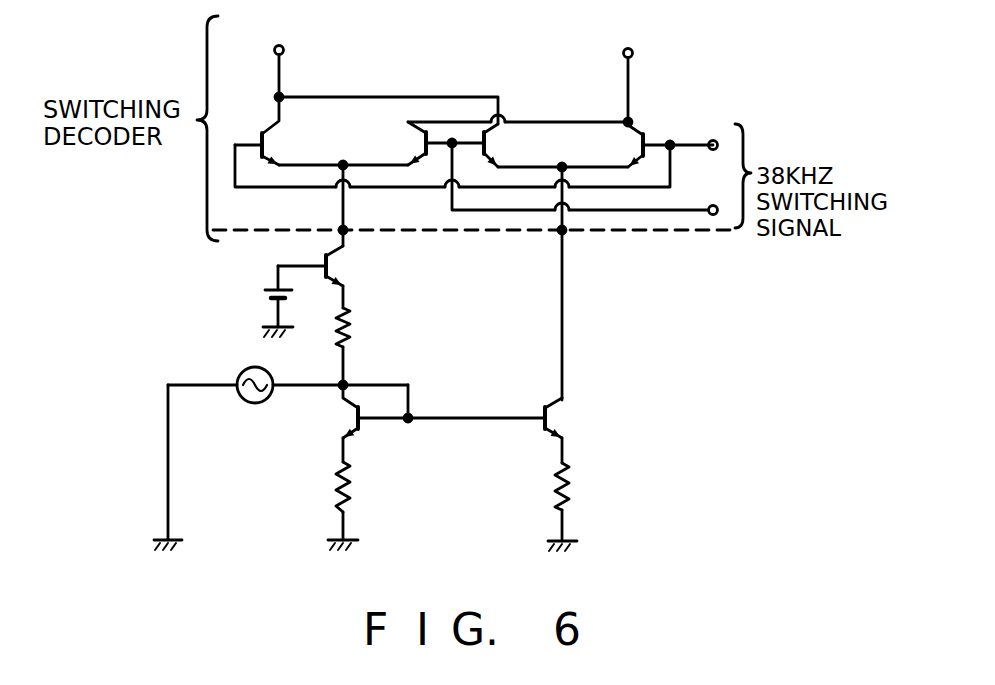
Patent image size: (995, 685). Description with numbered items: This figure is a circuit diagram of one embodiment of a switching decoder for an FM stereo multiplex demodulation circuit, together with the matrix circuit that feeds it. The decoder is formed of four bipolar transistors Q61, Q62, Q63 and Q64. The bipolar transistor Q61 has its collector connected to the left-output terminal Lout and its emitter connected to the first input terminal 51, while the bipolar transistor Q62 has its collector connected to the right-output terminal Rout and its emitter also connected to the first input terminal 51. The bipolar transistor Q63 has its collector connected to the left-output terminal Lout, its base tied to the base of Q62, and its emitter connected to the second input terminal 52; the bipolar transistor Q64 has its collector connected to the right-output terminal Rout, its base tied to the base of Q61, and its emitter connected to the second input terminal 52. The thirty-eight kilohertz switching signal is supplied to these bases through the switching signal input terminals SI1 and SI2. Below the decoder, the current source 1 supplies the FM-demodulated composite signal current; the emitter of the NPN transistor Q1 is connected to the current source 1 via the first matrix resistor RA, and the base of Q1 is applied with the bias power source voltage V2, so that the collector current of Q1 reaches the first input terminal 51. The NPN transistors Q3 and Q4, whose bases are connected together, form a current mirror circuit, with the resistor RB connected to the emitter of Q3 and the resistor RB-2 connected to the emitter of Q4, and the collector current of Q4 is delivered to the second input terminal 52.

The current source 1 is at (241, 401).
The first input terminal 51 is at (340, 234).
The second input terminal 52 is at (566, 235).
The bipolar transistor Q61 is at (251, 129).
The bipolar transistor Q62 is at (402, 142).
The bipolar transistor Q63 is at (505, 145).
The bipolar transistor Q64 is at (670, 132).
The NPN transistor Q1 is at (334, 268).
The NPN transistor Q3 is at (322, 414).
The NPN transistor Q4 is at (581, 419).
The first matrix resistor RA is at (363, 335).
The second matrix resistor RB is at (360, 494).
The resistor RB-2 is at (589, 494).
The bias power source voltage V2 is at (257, 301).
The switching signal input terminal SI1 is at (720, 120).
The switching signal input terminal SI2 is at (723, 241).
The left-output terminal Lout is at (285, 54).
The right-output terminal Rout is at (631, 66).